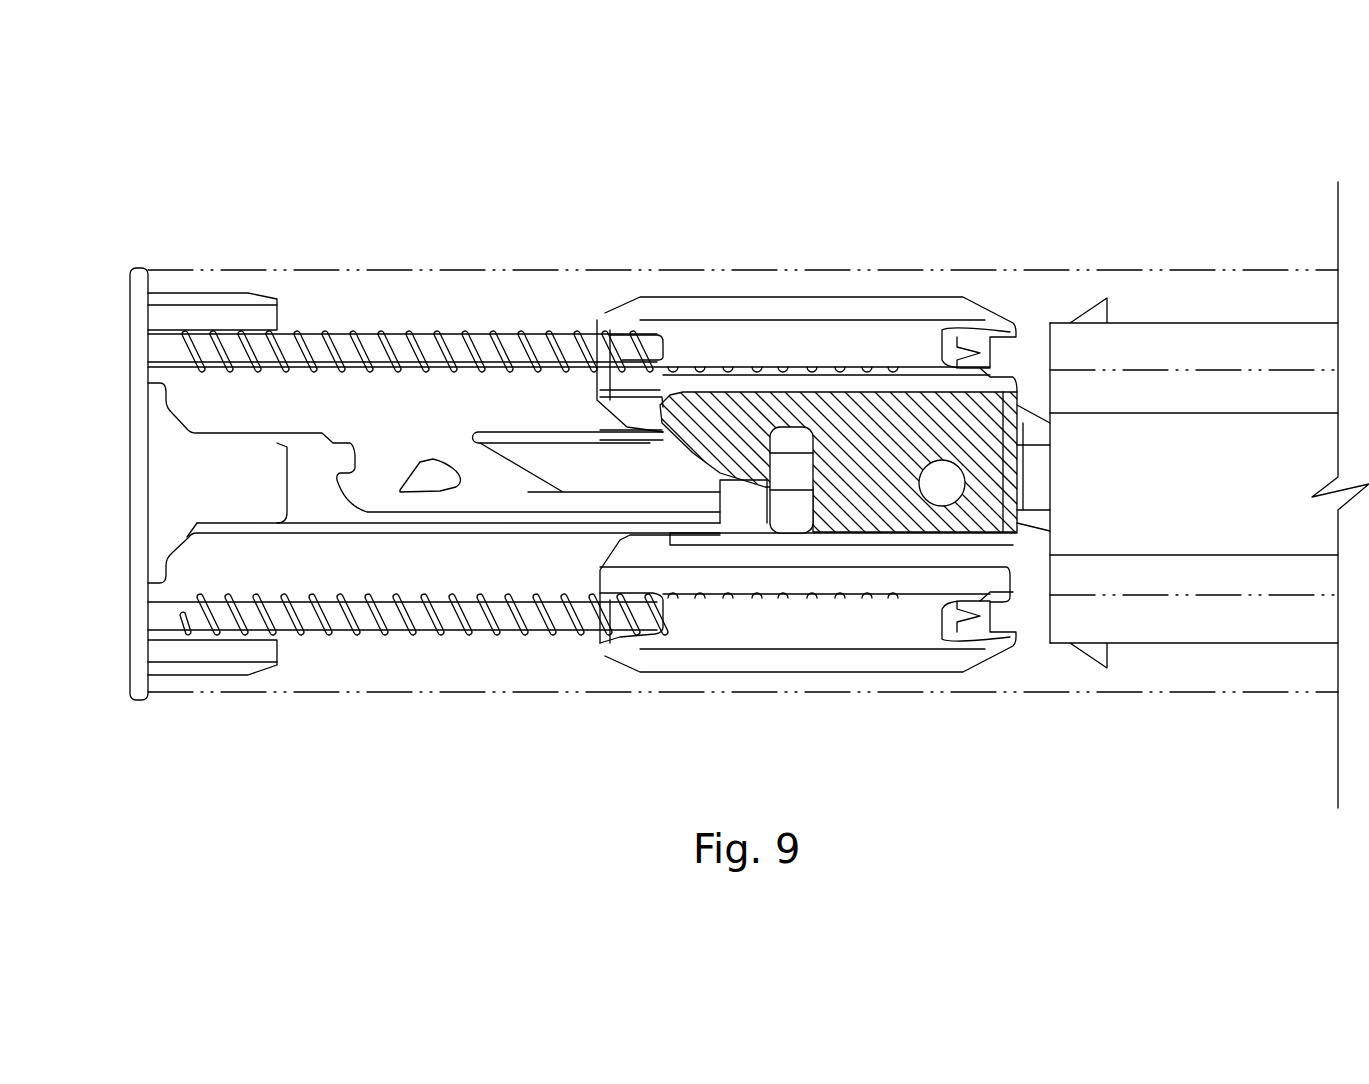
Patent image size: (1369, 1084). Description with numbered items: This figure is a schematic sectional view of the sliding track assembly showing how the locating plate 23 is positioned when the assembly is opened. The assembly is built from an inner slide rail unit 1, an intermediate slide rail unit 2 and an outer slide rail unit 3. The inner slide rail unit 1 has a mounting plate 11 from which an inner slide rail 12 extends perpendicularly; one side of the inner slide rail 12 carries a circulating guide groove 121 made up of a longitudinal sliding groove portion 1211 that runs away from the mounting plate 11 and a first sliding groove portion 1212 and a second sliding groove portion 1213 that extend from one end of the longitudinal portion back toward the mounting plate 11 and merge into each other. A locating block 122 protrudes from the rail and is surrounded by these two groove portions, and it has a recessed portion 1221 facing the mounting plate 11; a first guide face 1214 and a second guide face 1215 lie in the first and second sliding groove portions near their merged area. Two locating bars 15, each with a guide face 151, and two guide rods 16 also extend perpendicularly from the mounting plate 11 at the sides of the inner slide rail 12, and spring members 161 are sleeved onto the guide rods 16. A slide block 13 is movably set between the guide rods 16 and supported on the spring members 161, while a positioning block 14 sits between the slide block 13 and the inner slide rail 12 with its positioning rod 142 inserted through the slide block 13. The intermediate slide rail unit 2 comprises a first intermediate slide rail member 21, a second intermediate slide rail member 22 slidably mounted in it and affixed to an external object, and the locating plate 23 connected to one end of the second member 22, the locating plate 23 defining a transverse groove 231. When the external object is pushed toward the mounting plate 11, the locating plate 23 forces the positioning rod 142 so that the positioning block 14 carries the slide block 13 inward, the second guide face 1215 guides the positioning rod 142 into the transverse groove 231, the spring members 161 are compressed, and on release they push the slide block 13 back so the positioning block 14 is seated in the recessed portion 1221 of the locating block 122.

The inner slide rail unit 1 is at (105, 372).
The mounting plate 11 is at (130, 453).
The inner slide rail 12 is at (305, 460).
The circulating guide groove 121 is at (533, 480).
The longitudinal sliding groove portion 1211 is at (622, 507).
The first sliding groove portion 1212 is at (403, 455).
The second sliding groove portion 1213 is at (453, 500).
The first guide face 1214 is at (347, 453).
The second guide face 1215 is at (337, 490).
The locating block 122 is at (442, 460).
The recessed portion 1221 is at (417, 460).
The slide block 13 is at (768, 310).
The positioning block 14 is at (850, 537).
The positioning rod 142 is at (785, 505).
The locating bar 15 is at (198, 300).
The guide face 151 is at (263, 297).
The guide rod 16 is at (223, 617).
The spring member 161 is at (263, 500).
The intermediate slide rail unit 2 is at (1213, 655).
The first intermediate slide rail member 21 is at (1203, 370).
The second intermediate slide rail member 22 is at (1125, 620).
The locating plate 23 is at (898, 413).
The transverse groove 231 is at (792, 427).
The outer slide rail unit 3 is at (1003, 705).